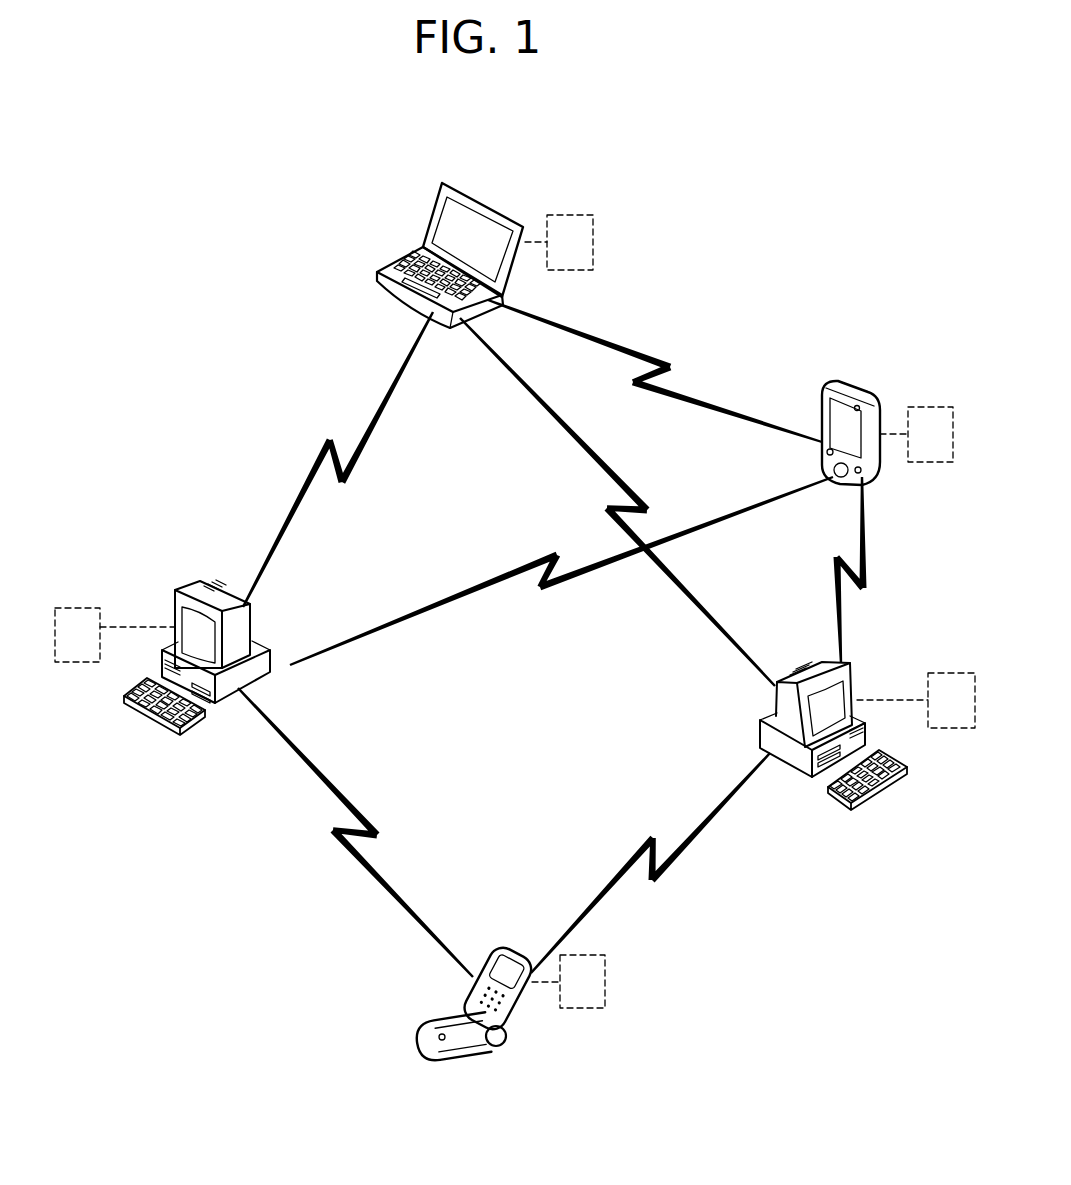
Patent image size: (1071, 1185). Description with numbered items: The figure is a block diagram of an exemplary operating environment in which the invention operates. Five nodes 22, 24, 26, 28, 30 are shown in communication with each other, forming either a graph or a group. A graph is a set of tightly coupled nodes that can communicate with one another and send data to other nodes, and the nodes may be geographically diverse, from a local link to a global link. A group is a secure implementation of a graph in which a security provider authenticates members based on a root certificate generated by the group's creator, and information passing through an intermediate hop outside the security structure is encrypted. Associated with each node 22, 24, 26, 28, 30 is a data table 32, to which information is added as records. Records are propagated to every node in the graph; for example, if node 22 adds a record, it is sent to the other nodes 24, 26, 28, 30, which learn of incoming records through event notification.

The node 22 is at (215, 590).
The node 24 is at (483, 198).
The node 26 is at (853, 386).
The node 28 is at (790, 768).
The node 30 is at (462, 1063).
The data table 32 is at (570, 215).